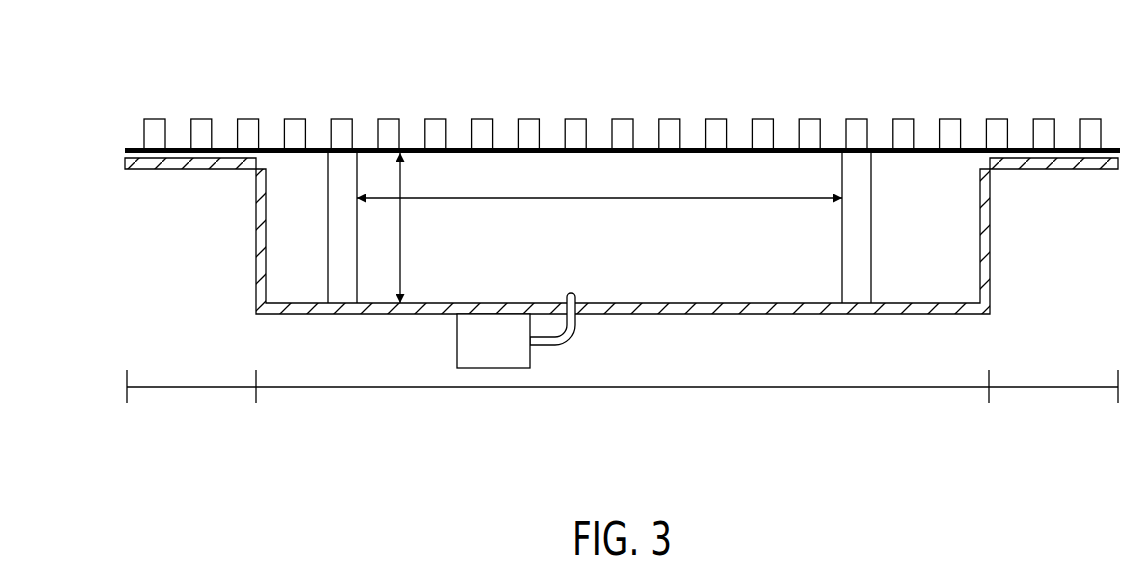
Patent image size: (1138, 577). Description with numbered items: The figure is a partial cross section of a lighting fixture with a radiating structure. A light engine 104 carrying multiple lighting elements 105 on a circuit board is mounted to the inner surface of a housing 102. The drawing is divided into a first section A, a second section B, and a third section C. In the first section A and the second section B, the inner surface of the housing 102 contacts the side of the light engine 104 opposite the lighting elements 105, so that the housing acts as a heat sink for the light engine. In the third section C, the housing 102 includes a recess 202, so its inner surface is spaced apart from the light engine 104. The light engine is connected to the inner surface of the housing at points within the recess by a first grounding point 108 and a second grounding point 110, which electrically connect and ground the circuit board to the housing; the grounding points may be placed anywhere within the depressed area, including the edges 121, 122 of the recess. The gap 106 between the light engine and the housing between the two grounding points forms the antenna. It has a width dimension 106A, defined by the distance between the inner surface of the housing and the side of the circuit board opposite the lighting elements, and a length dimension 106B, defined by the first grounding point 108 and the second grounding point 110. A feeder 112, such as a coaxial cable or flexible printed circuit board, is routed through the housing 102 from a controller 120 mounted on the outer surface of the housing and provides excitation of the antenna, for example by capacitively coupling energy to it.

The housing 102 is at (148, 173).
The light engine 104 is at (120, 148).
The lighting elements 105 is at (155, 113).
The gap 106 is at (715, 272).
The width dimension 106A is at (402, 242).
The length dimension 106B is at (513, 199).
The first grounding point 108 is at (323, 282).
The second grounding point 110 is at (873, 282).
The feeder 112 is at (583, 292).
The controller 120 is at (511, 356).
The edge of the recess 121 is at (263, 152).
The edge of the recess 122 is at (980, 153).
The recess 202 is at (1007, 301).
The first section A is at (192, 388).
The second section B is at (1053, 388).
The third section C is at (615, 388).